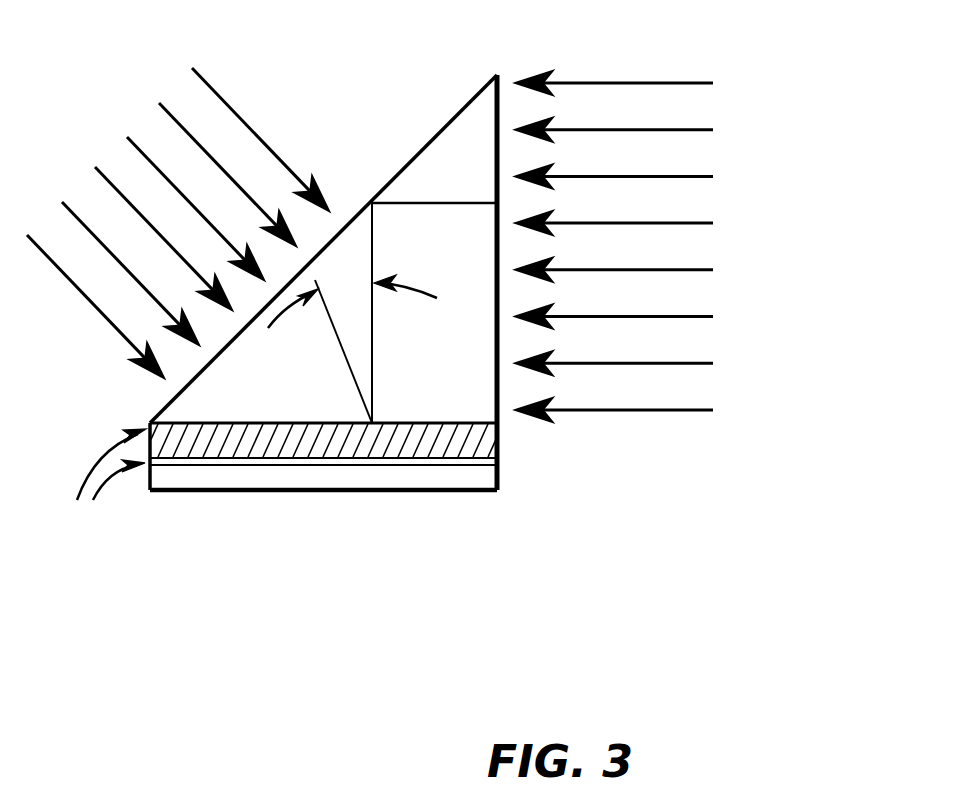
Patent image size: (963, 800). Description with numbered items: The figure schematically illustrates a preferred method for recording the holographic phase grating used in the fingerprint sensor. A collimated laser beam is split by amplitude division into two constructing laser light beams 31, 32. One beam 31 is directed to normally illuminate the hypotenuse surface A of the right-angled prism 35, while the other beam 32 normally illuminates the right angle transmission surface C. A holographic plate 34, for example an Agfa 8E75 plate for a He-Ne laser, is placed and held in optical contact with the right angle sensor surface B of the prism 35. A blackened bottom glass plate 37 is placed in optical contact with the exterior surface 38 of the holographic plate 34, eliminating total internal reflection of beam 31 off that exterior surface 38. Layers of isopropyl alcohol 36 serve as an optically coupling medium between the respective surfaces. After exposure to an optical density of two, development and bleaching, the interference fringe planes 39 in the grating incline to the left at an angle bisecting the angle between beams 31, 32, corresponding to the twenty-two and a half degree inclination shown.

The constructing laser light beam 31 is at (265, 141).
The constructing laser light beam 32 is at (638, 82).
The holographic plate 34 is at (448, 464).
The prism 35 is at (323, 282).
The isopropyl alcohol 36 is at (107, 516).
The blackened bottom glass plate 37 is at (341, 491).
The exterior surface of the holographic plate 38 is at (272, 462).
The interference fringe planes 39 is at (472, 436).